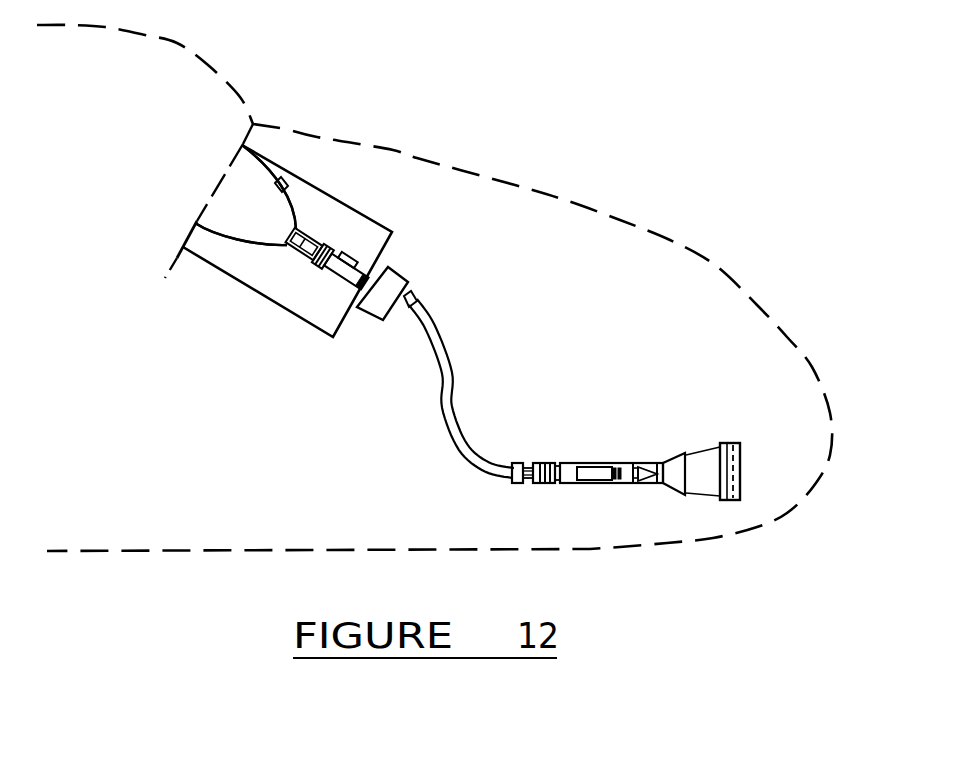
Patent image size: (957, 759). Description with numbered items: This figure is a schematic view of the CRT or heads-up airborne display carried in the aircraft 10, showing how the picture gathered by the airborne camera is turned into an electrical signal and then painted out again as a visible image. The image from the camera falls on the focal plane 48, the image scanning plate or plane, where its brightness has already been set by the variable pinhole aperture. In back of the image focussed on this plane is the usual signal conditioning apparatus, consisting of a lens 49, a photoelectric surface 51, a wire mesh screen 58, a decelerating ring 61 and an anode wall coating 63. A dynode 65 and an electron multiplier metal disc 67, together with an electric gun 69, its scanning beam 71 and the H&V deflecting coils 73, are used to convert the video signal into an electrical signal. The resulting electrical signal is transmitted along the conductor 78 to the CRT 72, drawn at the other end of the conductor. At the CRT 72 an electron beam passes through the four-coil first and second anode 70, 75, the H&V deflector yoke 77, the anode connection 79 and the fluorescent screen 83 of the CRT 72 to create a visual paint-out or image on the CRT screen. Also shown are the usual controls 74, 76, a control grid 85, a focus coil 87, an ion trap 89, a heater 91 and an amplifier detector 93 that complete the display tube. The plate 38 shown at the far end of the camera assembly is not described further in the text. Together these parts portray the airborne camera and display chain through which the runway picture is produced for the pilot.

The aircraft 10 is at (716, 266).
The mounting plate 38 is at (741, 457).
The focal plane 48 is at (733, 501).
The lens 49 is at (672, 485).
The photoelectric surface 51 is at (637, 485).
The wire mesh screen 58 is at (618, 485).
The decelerating ring 61 is at (613, 462).
The anode wall coating 63 is at (641, 460).
The dynode 65 is at (513, 462).
The electron multiplier metal disc 67 is at (520, 484).
The electric gun 69 is at (543, 462).
The first anode 70 is at (313, 257).
The scanning beam 71 is at (563, 484).
The CRT 72 is at (222, 173).
The H&V deflecting coils 73 is at (592, 463).
The control 74 is at (184, 238).
The control 76 is at (245, 195).
The second anode 75 is at (296, 255).
The H&V deflector yoke 77 is at (311, 240).
The conductor 78 is at (430, 331).
The anode connection 79 is at (278, 182).
The fluorescent screen 83 is at (205, 192).
The control grid 85 is at (338, 268).
The focus coil 87 is at (346, 262).
The ion trap 89 is at (348, 254).
The heater 91 is at (400, 279).
The amplifier detector 93 is at (379, 321).